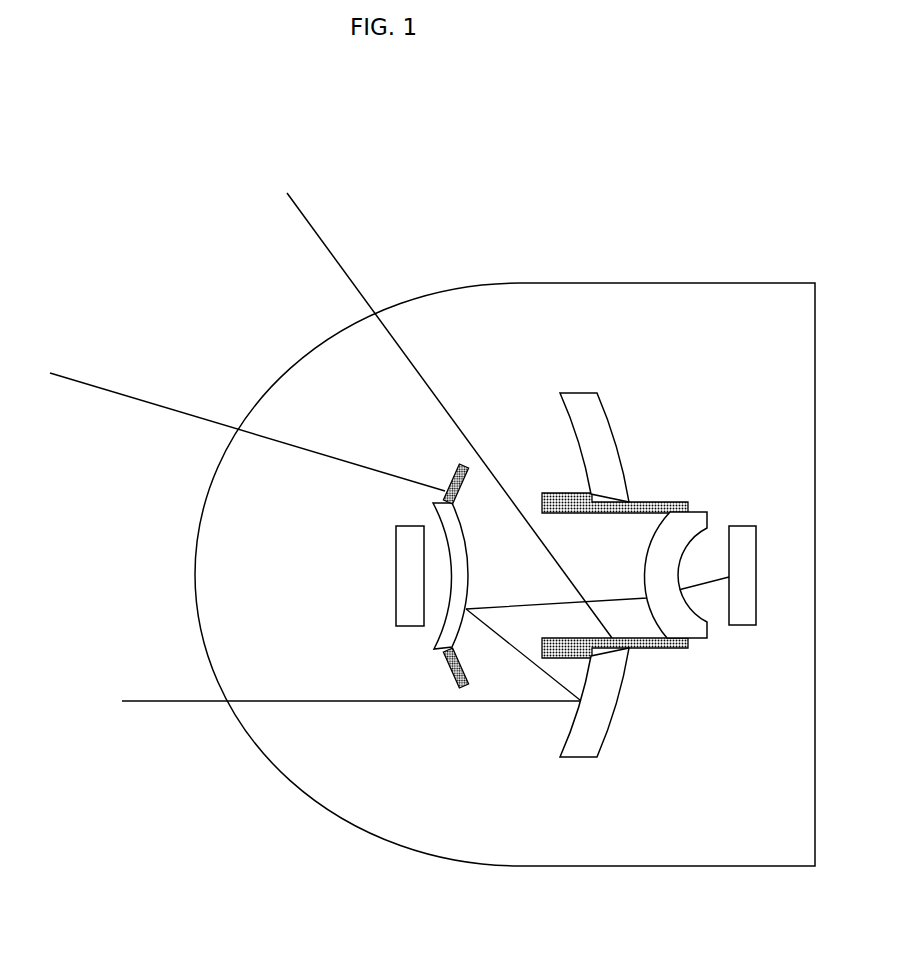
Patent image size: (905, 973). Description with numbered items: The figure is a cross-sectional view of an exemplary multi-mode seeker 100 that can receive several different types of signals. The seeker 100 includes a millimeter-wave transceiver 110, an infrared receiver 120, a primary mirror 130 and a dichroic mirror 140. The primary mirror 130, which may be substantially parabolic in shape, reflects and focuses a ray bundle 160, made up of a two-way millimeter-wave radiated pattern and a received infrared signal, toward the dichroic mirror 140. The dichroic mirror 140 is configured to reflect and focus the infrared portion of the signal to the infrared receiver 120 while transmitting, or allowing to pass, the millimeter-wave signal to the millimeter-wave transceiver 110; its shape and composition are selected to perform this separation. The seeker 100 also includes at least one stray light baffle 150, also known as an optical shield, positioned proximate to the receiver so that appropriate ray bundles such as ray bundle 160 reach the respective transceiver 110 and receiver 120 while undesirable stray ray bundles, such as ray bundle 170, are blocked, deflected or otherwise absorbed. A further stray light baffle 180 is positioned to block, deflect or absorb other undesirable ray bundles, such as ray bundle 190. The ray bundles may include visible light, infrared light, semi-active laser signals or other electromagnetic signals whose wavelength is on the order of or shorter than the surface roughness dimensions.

The seeker 100 is at (217, 264).
The millimeter-wave transceiver 110 is at (395, 608).
The infrared receiver 120 is at (756, 585).
The primary mirror 130 is at (617, 703).
The dichroic mirror 140 is at (468, 547).
The stray light baffle 150 is at (580, 492).
The ray bundle 160 is at (182, 702).
The ray bundle 170 is at (325, 246).
The stray light baffle 180 is at (455, 476).
The ray bundle 190 is at (112, 392).